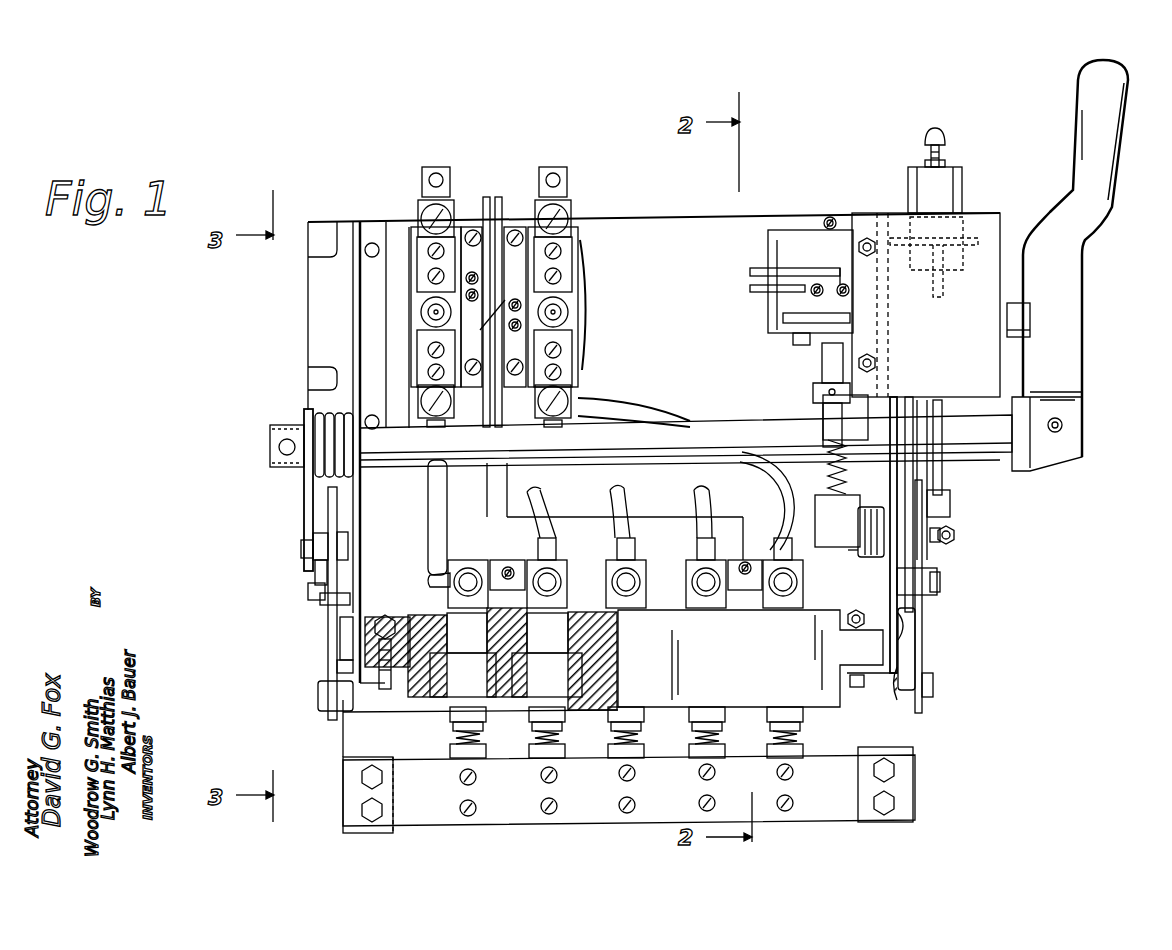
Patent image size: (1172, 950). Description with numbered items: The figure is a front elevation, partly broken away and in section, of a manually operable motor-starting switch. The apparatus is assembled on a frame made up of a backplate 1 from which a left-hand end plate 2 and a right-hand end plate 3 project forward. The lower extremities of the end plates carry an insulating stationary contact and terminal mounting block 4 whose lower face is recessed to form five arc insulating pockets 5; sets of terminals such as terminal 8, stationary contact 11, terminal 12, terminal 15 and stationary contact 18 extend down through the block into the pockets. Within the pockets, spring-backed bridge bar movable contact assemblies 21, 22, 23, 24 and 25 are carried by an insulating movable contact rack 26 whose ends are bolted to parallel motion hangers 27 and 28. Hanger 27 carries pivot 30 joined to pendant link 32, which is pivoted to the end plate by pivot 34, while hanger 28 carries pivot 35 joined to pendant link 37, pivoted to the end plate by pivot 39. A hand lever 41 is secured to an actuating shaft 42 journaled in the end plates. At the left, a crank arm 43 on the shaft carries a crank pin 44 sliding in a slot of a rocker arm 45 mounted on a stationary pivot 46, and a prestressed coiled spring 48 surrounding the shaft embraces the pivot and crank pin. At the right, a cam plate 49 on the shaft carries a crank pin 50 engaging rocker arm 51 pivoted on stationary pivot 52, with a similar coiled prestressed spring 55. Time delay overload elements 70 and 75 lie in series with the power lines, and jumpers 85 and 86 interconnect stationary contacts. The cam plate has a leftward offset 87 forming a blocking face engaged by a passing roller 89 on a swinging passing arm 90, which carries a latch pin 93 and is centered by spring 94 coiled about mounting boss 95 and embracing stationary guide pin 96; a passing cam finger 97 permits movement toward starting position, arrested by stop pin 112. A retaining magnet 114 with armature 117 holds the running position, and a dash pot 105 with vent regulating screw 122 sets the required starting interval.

The backplate 1 is at (628, 217).
The left-hand end plate 2 is at (352, 330).
The right-hand end plate 3 is at (873, 672).
The stationary contact and terminal mounting block 4 is at (430, 617).
The arc insulating pockets 5 is at (430, 705).
The terminal 8 is at (447, 612).
The stationary contact 11 is at (570, 582).
The terminal 12 is at (640, 570).
The terminal 15 is at (703, 612).
The stationary contact 18 is at (784, 612).
The movable contact assembly 21 is at (448, 750).
The movable contact assembly 22 is at (545, 764).
The movable contact assembly 23 is at (647, 728).
The movable contact assembly 24 is at (727, 730).
The movable contact assembly 25 is at (803, 722).
The movable contact rack 26 is at (828, 803).
The parallel motion hanger 27 is at (340, 800).
The parallel motion hanger 28 is at (915, 790).
The pivot 30 is at (327, 716).
The pendant parallel motion link 32 is at (343, 667).
The pivot 34 is at (352, 647).
The pivot 35 is at (934, 687).
The pendant link 37 is at (897, 680).
The pivot 39 is at (918, 628).
The hand lever 41 is at (1100, 128).
The actuating shaft 42 is at (999, 448).
The crank arm 43 is at (305, 497).
The crank pin 44 is at (320, 547).
The rocker arm 45 is at (333, 620).
The stationary pivot 46 is at (318, 593).
The prestressed coiled spring 48 is at (325, 405).
The cam plate 49 is at (955, 473).
The crank pin 50 is at (955, 536).
The rocker arm 51 is at (921, 652).
The stationary pivot 52 is at (905, 580).
The coiled prestressed spring 55 is at (940, 590).
The time delay overload element 70 is at (415, 318).
The time delay overload element 75 is at (575, 308).
The jumper 85 is at (509, 568).
The jumper 86 is at (758, 520).
The offset 87 is at (950, 520).
The passing roller 89 is at (915, 434).
The swinging passing arm 90 is at (905, 487).
The latch pin 93 is at (835, 434).
The centering spring 94 is at (875, 560).
The mounting boss 95 is at (850, 555).
The stationary guide pin 96 is at (837, 493).
The passing cam finger 97 is at (920, 397).
The dash pot 105 is at (965, 186).
The stop pin 112 is at (1022, 320).
The retaining magnet 114 is at (775, 246).
The armature 117 is at (828, 361).
The vent regulating screw 122 is at (948, 148).